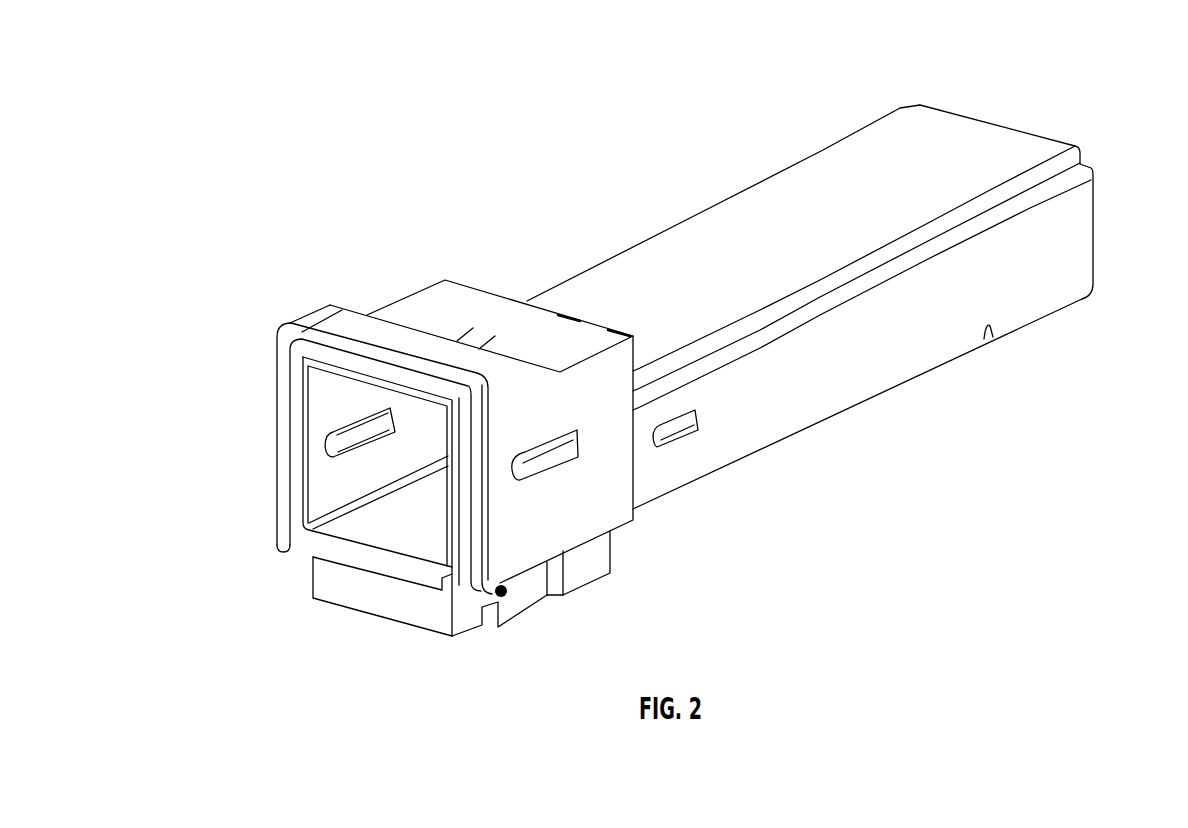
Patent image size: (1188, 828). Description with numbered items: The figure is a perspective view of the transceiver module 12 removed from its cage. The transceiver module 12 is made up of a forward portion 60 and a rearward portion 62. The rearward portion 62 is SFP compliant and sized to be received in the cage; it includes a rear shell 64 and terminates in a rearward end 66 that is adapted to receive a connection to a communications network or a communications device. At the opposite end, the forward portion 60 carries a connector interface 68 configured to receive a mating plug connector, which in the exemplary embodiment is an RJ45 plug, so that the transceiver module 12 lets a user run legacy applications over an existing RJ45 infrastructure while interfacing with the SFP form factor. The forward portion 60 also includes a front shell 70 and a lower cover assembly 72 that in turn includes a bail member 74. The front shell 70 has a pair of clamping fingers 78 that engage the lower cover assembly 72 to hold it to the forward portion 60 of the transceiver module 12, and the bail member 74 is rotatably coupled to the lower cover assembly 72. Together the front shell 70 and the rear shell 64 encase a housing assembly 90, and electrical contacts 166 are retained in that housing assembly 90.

The transceiver module 12 is at (452, 105).
The forward portion 60 is at (398, 260).
The rearward portion 62 is at (852, 92).
The rear shell 64 is at (756, 180).
The rearward end 66 is at (1100, 204).
The connector interface 68 is at (275, 518).
The front shell 70 is at (455, 275).
The lower cover assembly 72 is at (372, 630).
The bail member 74 is at (295, 322).
The clamping fingers 78 is at (556, 607).
The housing assembly 90 is at (332, 604).
The electrical contacts 166 is at (432, 636).